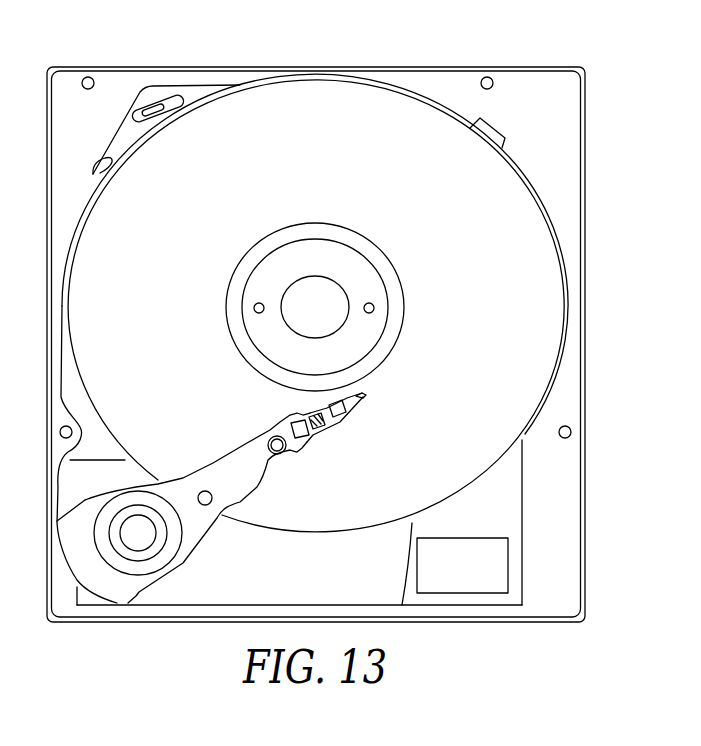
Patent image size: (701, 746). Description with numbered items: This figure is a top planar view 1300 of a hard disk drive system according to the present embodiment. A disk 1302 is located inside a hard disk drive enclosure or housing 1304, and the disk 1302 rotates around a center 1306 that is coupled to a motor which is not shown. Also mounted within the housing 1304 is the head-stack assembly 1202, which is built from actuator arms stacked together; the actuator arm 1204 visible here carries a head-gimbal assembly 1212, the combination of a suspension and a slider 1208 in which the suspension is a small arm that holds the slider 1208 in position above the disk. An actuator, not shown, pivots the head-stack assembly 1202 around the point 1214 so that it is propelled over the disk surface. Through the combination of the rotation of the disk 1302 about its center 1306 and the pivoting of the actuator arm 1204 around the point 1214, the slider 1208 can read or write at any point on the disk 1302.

The top planar view 1300 is at (545, 37).
The disk 1302 is at (336, 195).
The hard disk drive enclosure or housing 1304 is at (584, 214).
The center 1306 is at (328, 290).
The head-stack assembly 1202 is at (251, 498).
The upper actuator arm 1204 is at (220, 473).
The upper slider 1208 is at (365, 395).
The head-gimbal assembly 1212 is at (336, 444).
The point 1214 is at (140, 528).